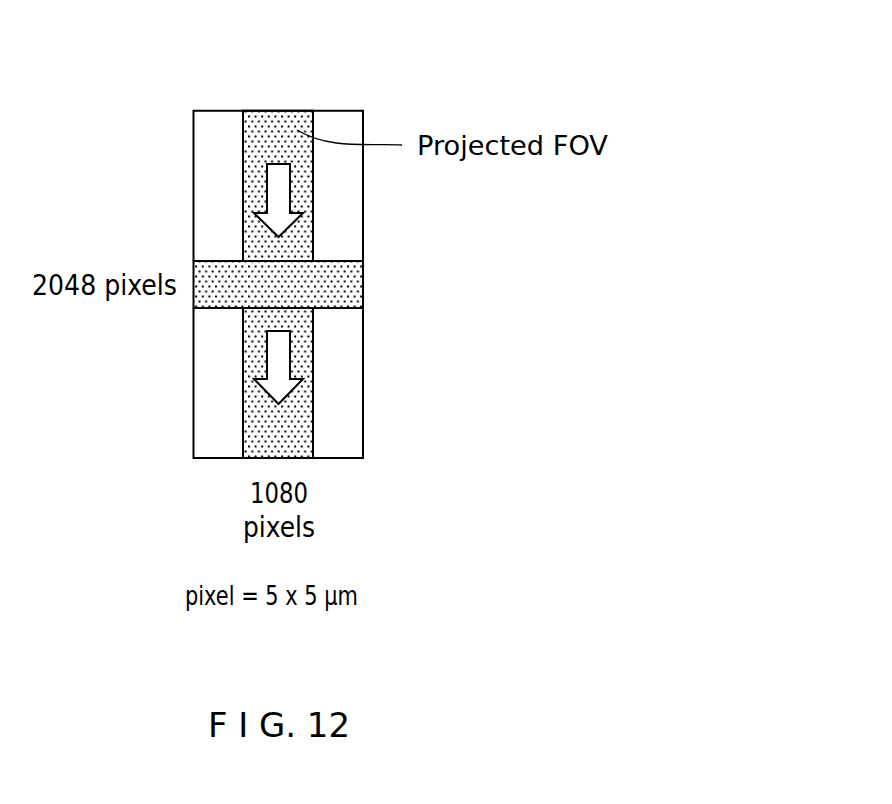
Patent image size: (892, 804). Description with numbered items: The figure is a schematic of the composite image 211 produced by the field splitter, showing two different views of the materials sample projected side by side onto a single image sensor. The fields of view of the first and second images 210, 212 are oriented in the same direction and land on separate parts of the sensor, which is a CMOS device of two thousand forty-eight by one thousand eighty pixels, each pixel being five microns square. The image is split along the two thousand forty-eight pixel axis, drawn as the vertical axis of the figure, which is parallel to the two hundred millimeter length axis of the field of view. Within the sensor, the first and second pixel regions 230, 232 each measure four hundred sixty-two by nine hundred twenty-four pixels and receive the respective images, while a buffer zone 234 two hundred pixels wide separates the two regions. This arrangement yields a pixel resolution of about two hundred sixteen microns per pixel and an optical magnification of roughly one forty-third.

The composite image 211 is at (288, 234).
The first image 210 is at (374, 209).
The second image 212 is at (374, 364).
The buffer zone 234 is at (377, 279).
The first pixel region 230 is at (242, 206).
The second pixel region 232 is at (242, 392).